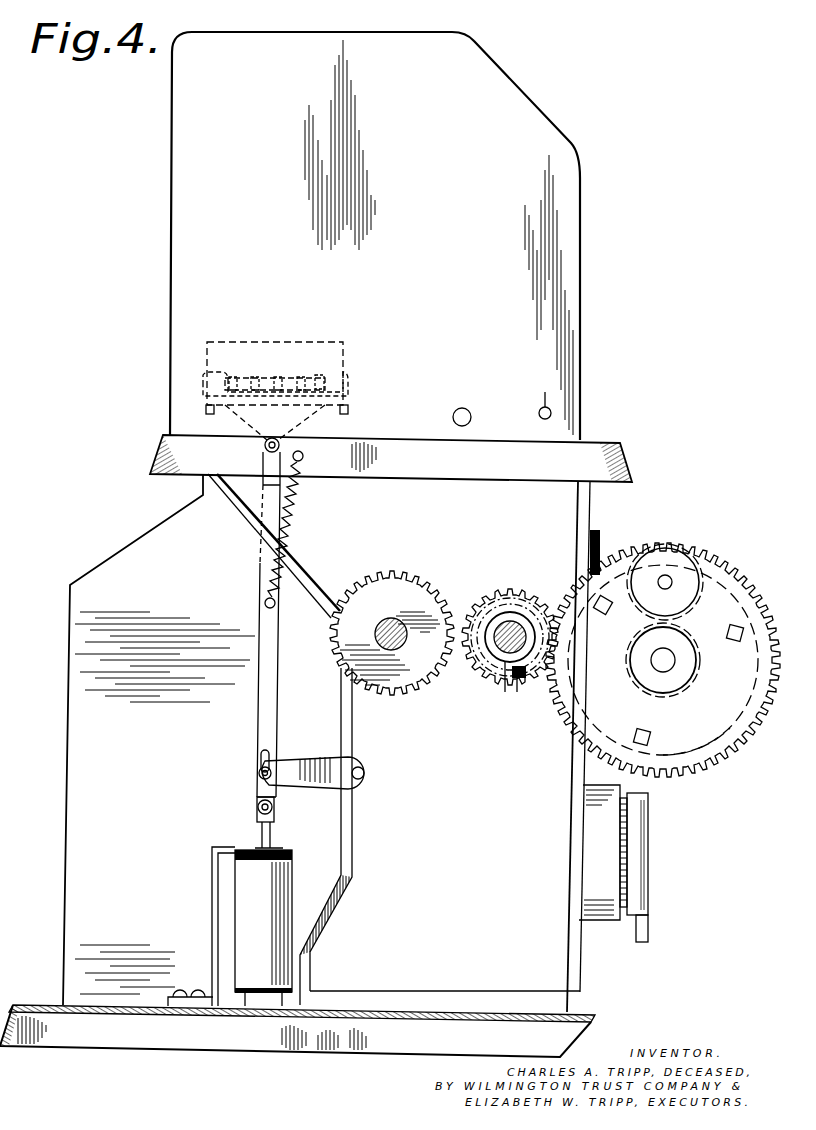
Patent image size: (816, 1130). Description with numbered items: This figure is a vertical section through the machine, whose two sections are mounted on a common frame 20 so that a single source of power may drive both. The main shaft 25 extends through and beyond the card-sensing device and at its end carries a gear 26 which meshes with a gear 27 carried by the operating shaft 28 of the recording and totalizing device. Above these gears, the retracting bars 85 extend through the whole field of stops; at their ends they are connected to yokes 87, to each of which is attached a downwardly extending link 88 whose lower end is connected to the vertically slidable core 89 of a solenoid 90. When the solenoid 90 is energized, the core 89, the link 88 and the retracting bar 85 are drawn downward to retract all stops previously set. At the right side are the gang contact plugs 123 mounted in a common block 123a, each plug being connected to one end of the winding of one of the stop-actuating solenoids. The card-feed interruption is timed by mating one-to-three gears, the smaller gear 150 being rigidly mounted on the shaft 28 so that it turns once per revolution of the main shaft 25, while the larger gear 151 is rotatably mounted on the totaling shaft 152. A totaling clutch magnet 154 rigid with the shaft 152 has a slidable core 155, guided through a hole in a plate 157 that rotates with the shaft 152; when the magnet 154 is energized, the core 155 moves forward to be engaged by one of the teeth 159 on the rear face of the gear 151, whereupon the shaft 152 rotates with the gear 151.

The frame 20 is at (372, 1043).
The main shaft 25 is at (398, 647).
The gear 26 is at (420, 596).
The gear 27 is at (485, 587).
The operating shaft 28 is at (512, 653).
The retracting bar 85 is at (338, 383).
The yoke 87 is at (210, 398).
The link 88 is at (267, 676).
The core 89 is at (262, 830).
The solenoid 90 is at (255, 904).
The gang contact plugs 123 is at (625, 829).
The common block 123a is at (638, 863).
The gear 150 is at (528, 600).
The gear 151 is at (760, 566).
The totaling shaft 152 is at (668, 665).
The totaling clutch magnet 154 is at (655, 565).
The slidable core 155 is at (668, 586).
The plate 157 is at (692, 750).
The teeth 159 is at (640, 730).